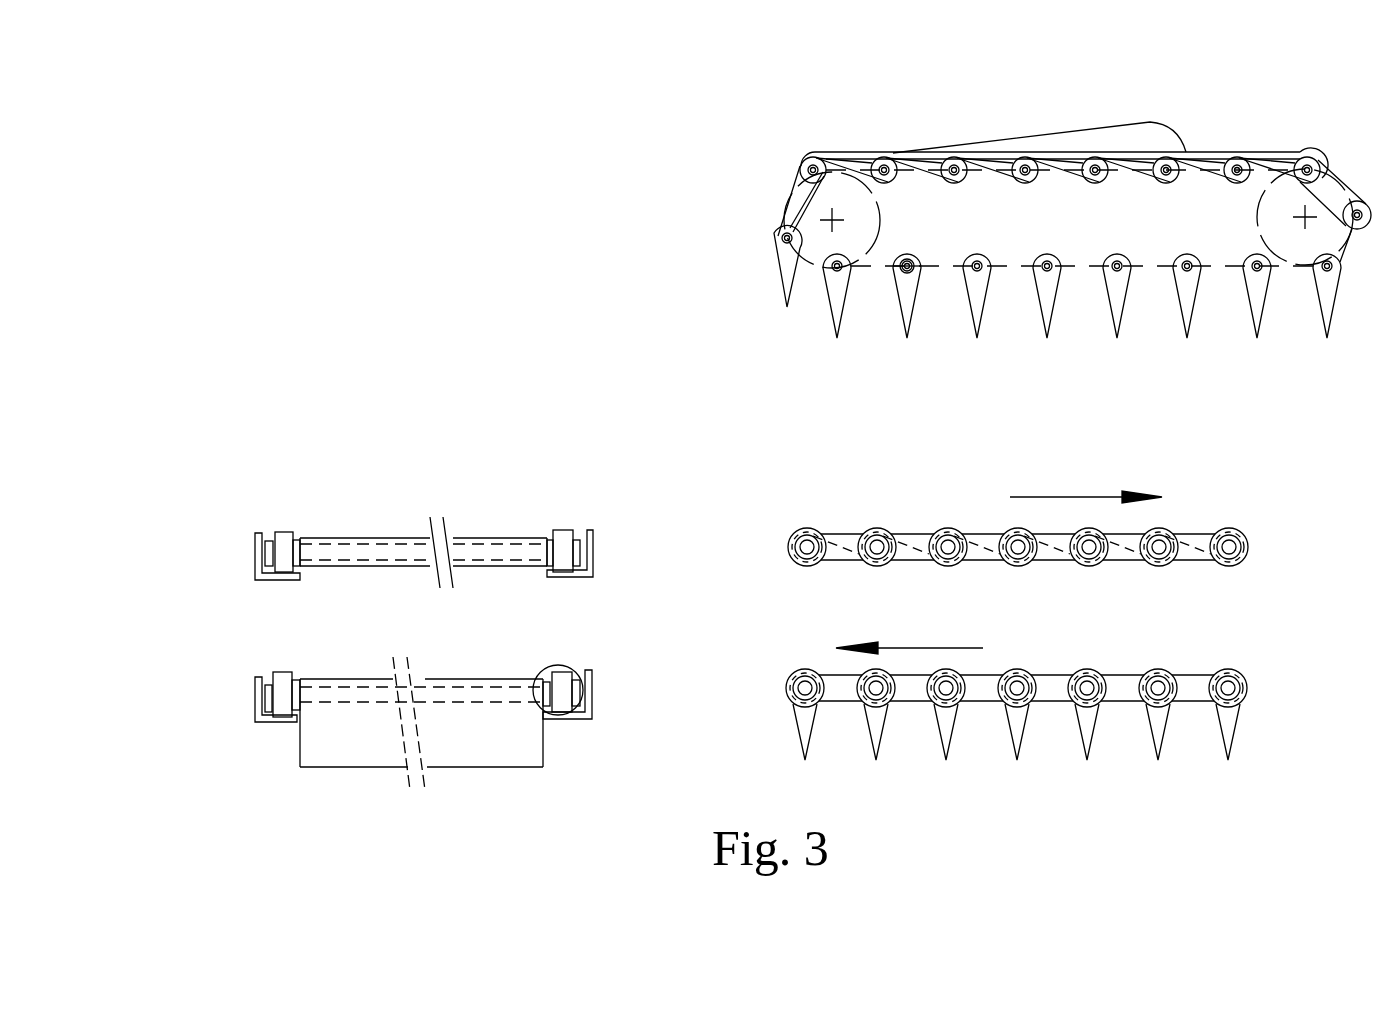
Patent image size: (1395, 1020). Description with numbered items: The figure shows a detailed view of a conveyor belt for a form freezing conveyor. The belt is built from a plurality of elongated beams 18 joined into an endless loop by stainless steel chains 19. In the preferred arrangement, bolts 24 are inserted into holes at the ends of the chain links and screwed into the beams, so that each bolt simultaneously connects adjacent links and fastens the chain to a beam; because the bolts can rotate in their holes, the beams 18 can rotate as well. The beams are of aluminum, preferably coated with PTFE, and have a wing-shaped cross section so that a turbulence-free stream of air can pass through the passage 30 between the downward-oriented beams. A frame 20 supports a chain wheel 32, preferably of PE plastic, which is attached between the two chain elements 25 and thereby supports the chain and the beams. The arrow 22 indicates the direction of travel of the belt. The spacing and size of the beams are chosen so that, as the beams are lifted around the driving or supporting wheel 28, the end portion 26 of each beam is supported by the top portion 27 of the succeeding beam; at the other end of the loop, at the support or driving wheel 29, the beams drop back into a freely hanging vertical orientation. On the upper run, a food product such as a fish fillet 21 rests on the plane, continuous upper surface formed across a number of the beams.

The elongated beams 18 is at (492, 533).
The stainless steel chains 19 is at (790, 682).
The frame 20 is at (253, 538).
The fish fillet 21 is at (1130, 135).
The arrow 22 is at (1158, 492).
The bolts 24 is at (793, 540).
The chain elements 25 is at (303, 537).
The end portion 26 is at (910, 325).
The top portion 27 is at (892, 292).
The driving or supporting wheel 28 is at (857, 207).
The support or driving wheel 29 is at (1326, 197).
The passage 30 is at (1083, 328).
The chain wheel 32 is at (283, 533).